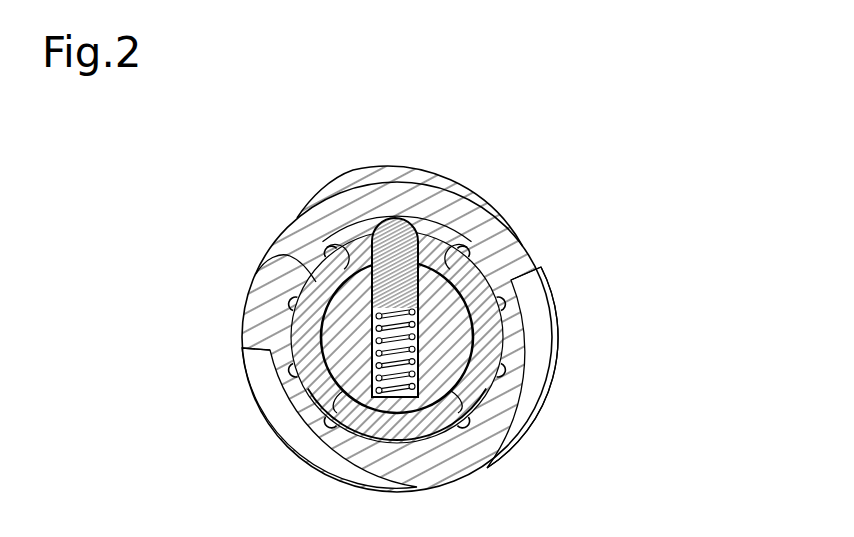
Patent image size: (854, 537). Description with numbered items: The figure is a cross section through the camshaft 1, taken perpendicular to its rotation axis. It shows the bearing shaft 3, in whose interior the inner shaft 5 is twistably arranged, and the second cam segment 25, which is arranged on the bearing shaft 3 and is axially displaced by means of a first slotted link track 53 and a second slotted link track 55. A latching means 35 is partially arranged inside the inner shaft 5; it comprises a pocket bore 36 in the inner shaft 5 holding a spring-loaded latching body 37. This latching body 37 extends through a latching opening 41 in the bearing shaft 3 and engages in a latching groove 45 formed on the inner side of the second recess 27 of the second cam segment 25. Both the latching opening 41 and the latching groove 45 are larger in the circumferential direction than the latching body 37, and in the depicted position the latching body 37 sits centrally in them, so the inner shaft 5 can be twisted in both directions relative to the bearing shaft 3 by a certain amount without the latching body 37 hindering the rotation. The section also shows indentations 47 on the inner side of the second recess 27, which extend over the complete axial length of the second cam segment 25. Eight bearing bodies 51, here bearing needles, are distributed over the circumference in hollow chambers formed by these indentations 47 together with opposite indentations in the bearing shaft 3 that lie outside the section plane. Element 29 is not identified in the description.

The camshaft 1 is at (615, 143).
The bearing shaft 3 is at (256, 273).
The inner shaft 5 is at (505, 247).
The second cam segment 25 is at (297, 233).
The second recess 27 is at (292, 340).
The cap portion 29 is at (396, 148).
The latching means 35 is at (430, 379).
The pocket bore 36 is at (362, 447).
The spring-loaded latching body 37 is at (406, 252).
The latching opening 41 is at (455, 220).
The latching groove 45 is at (352, 242).
The indentations 47 is at (515, 312).
The bearing bodies 51 is at (515, 288).
The first slotted link track 53 is at (533, 377).
The second slotted link track 55 is at (275, 420).